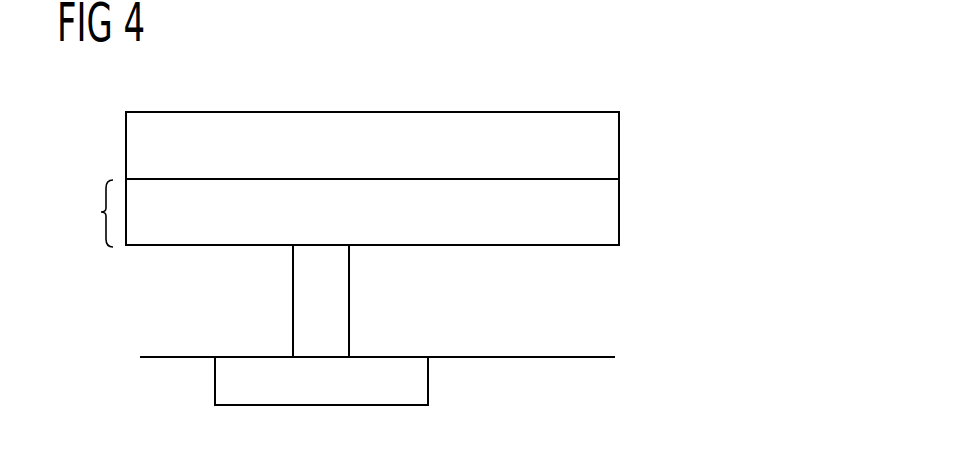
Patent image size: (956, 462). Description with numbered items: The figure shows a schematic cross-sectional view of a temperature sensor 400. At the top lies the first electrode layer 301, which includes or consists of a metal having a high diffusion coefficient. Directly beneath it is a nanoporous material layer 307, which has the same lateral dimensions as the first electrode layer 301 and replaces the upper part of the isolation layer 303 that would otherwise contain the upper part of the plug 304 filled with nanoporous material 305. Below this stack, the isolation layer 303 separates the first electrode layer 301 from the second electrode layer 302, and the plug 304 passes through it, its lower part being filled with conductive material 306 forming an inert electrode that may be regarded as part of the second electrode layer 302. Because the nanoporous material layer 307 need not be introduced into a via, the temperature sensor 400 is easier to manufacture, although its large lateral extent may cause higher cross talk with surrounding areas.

The temperature sensor 400 is at (541, 76).
The first electrode layer 301 is at (610, 145).
The nanoporous material 305 is at (610, 208).
The nanoporous material layer 307 is at (85, 213).
The plug 304 is at (293, 303).
The conductive material 306 is at (337, 282).
The isolation layer 303 is at (218, 328).
The second electrode layer 302 is at (420, 382).